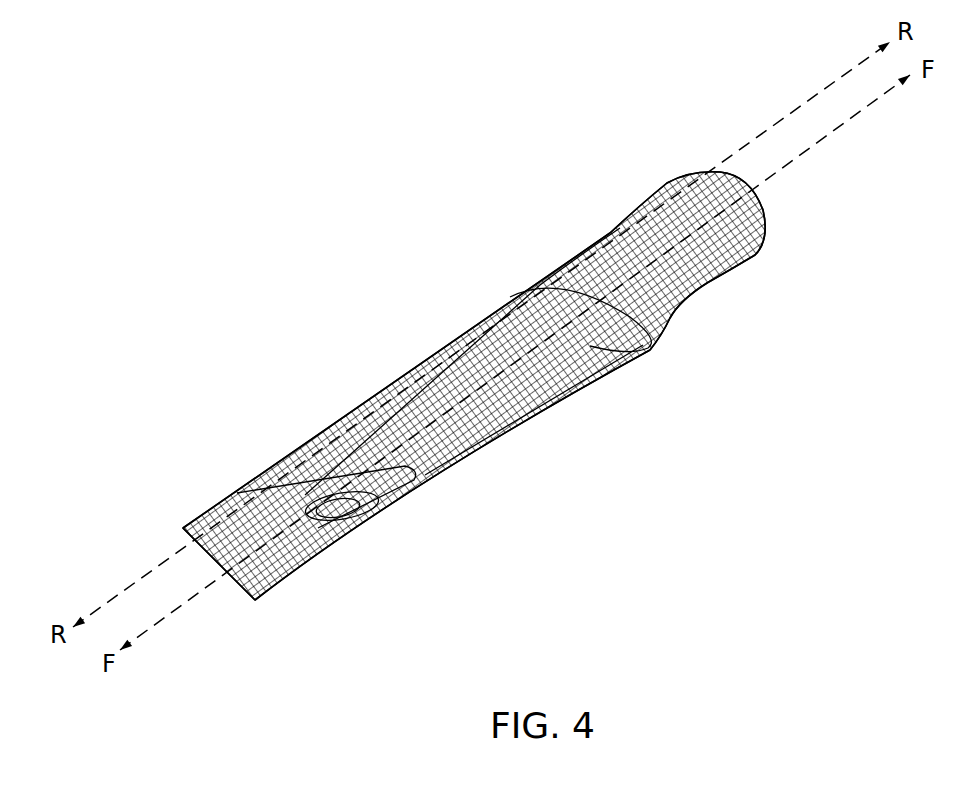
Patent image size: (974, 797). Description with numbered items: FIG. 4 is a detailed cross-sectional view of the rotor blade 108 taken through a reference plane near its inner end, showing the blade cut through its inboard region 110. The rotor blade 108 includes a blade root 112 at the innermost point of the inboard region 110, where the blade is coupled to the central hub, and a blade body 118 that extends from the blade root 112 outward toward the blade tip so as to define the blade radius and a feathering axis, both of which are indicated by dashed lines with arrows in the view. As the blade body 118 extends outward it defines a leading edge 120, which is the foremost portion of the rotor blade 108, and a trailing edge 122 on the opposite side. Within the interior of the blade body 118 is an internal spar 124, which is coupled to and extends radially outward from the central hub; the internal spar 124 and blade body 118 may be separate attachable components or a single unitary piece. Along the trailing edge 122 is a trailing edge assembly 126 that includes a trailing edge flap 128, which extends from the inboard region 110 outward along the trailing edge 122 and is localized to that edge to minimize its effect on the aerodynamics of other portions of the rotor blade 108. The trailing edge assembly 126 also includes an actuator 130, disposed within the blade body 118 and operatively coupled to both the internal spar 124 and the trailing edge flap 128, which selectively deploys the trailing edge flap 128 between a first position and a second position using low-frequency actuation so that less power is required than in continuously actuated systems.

The rotor blade 108 is at (115, 150).
The inboard region 110 is at (398, 212).
The blade root 112 is at (723, 180).
The blade body 118 is at (267, 480).
The leading edge 120 is at (300, 567).
The trailing edge 122 is at (213, 510).
The internal spar 124 is at (592, 346).
The trailing edge assembly 126 is at (342, 432).
The trailing edge flap 128 is at (393, 402).
The actuator 130 is at (378, 505).